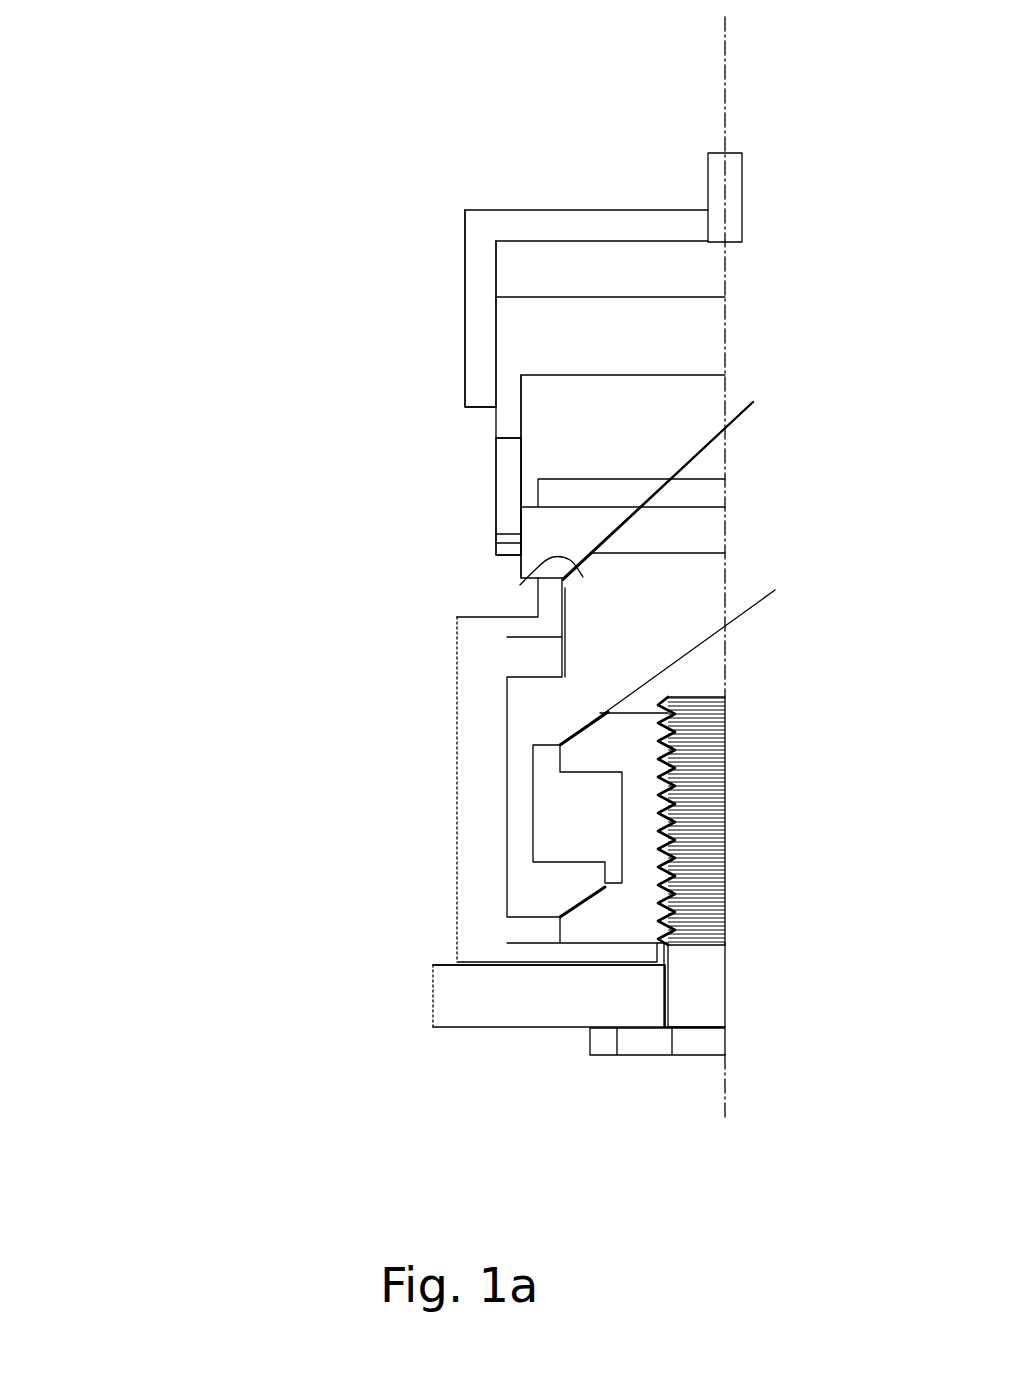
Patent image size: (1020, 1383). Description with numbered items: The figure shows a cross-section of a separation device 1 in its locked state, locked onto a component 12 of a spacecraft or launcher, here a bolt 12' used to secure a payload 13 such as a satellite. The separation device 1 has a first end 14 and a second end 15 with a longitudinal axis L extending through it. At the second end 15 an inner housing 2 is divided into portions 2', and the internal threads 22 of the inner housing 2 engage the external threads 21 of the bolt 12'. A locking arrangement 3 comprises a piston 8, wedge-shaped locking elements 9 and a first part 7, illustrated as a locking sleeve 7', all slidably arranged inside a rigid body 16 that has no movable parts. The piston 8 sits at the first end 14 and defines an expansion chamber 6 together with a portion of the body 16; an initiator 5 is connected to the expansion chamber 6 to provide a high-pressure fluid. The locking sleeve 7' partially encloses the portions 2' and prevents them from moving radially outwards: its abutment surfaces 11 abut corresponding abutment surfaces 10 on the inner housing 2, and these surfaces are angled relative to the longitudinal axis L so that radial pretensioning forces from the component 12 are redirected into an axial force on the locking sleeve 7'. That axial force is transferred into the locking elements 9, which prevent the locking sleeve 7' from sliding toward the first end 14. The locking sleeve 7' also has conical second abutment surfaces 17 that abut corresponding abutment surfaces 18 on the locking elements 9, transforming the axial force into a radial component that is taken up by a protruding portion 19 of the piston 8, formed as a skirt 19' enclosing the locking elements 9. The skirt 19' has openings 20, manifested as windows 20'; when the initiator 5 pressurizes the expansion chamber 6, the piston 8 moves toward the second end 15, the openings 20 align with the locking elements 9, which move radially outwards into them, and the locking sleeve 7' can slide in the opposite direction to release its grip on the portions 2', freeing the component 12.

The separation device 1 is at (249, 222).
The inner housing 2 is at (499, 814).
The portions of the inner housing 2' is at (707, 947).
The locking arrangement 3 is at (427, 556).
The initiator 5 is at (718, 180).
The expansion chamber 6 is at (515, 255).
The first part 7 is at (487, 770).
The locking sleeve 7' is at (701, 629).
The piston 8 is at (520, 330).
The wedge-shaped locking elements 9 is at (543, 548).
The abutment surfaces on the inner housing 10 is at (670, 710).
The abutment surfaces of the locking sleeve 11 is at (683, 708).
The component 12 is at (657, 1051).
The bolt 12' is at (715, 1074).
The payload 13 is at (510, 1005).
The first end 14 is at (447, 249).
The second end 15 is at (427, 978).
The body 16 is at (473, 352).
The second abutment surfaces 17 is at (520, 585).
The abutment surfaces on the locking elements 18 is at (613, 533).
The protruding portion 19 is at (366, 398).
The skirt 19' is at (400, 425).
The openings 20 is at (335, 467).
The windows 20' is at (396, 511).
The external threads 21 is at (693, 823).
The internal threads 22 is at (670, 790).
The longitudinal axis L is at (725, 80).